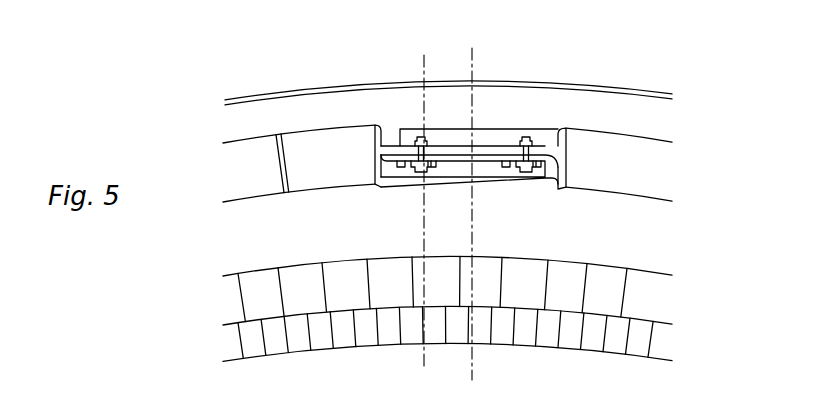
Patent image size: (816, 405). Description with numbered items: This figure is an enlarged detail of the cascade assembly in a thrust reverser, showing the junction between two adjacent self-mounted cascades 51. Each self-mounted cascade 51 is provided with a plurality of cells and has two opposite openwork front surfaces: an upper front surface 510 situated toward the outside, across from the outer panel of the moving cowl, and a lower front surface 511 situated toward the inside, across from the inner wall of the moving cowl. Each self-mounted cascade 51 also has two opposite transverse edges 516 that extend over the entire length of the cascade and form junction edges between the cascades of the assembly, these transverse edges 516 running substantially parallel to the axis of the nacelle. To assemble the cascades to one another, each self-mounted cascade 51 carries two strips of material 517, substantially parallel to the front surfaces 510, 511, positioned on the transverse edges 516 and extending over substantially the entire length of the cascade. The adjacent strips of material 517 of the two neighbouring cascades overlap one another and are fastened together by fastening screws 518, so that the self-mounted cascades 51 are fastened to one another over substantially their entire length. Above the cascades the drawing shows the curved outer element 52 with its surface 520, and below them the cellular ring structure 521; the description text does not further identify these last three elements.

The self-mounted cascade 51 is at (428, 175).
The outer band / casing 52 is at (632, 80).
The upper front surface 510 is at (251, 139).
The lower front surface 511 is at (250, 201).
The transverse edges 516 is at (392, 130).
The strips of material 517 is at (542, 143).
The fastening screws 518 is at (527, 141).
The surface of outer band 520 is at (280, 93).
The sector ring / honeycomb segments 521 is at (258, 300).